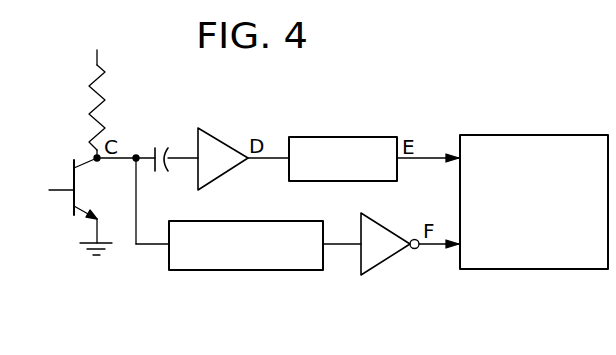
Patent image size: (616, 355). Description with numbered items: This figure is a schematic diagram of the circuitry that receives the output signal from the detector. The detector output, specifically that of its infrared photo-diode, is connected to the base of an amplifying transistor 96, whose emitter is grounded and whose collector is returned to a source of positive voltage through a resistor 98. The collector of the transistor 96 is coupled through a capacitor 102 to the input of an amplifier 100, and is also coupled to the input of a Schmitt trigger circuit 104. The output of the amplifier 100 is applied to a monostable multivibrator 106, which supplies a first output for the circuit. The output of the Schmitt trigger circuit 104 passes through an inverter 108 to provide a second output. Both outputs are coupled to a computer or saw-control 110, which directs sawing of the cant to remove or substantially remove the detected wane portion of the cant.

The amplifying transistor 96 is at (67, 174).
The resistor 98 is at (97, 93).
The amplifier 100 is at (222, 140).
The capacitor 102 is at (163, 147).
The Schmitt trigger circuit 104 is at (205, 270).
The monostable multivibrator 106 is at (352, 136).
The inverter 108 is at (382, 262).
The computer or saw-control 110 is at (522, 270).